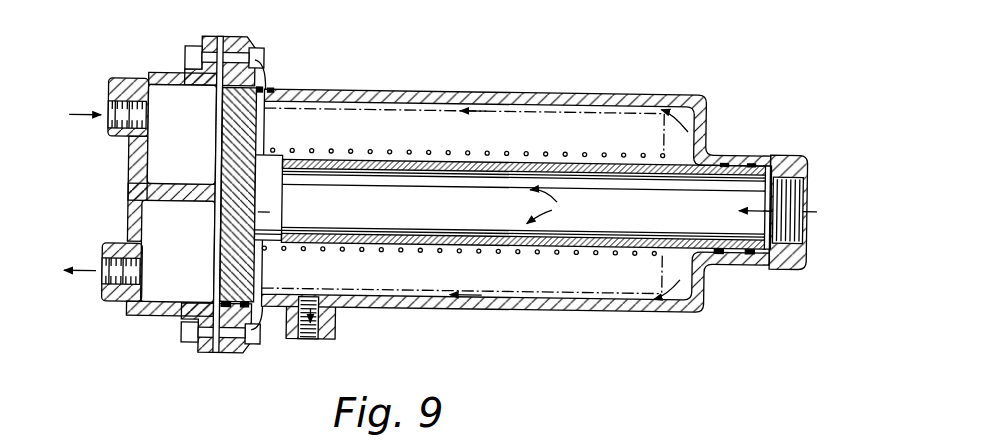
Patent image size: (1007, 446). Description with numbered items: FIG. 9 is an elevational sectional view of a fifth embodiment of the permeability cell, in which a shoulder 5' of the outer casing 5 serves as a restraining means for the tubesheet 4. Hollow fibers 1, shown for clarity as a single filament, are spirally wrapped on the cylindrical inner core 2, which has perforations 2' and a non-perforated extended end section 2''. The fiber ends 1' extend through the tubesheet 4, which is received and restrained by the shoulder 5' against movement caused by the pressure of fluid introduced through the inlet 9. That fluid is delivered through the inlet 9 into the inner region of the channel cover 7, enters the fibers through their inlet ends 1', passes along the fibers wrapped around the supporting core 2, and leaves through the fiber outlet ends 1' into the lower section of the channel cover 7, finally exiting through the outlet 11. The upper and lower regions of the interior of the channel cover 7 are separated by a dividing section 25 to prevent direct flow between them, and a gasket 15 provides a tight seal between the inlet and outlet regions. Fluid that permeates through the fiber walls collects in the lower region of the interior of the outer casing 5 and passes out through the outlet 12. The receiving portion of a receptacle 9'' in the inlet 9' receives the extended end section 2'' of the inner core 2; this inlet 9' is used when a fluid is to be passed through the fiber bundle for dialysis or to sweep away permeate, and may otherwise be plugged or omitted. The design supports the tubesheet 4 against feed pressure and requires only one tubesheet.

The hollow fibers 1 is at (463, 187).
The ends of the hollow fibers 1' is at (221, 194).
The inner core 2 is at (510, 202).
The perforations 2' is at (524, 203).
The non-perforated extended end section 2'' is at (759, 207).
The tubesheet 4 is at (263, 87).
The outer casing 5 is at (295, 73).
The shoulder 5' is at (252, 335).
The channel cover 7 is at (160, 74).
The inlet 9 is at (108, 91).
The inlet 9' is at (795, 190).
The receptacle 9'' is at (744, 180).
The outlet 11 is at (104, 265).
The outlet 12 is at (319, 292).
The gasket 15 is at (214, 185).
The dividing section 25 is at (167, 186).